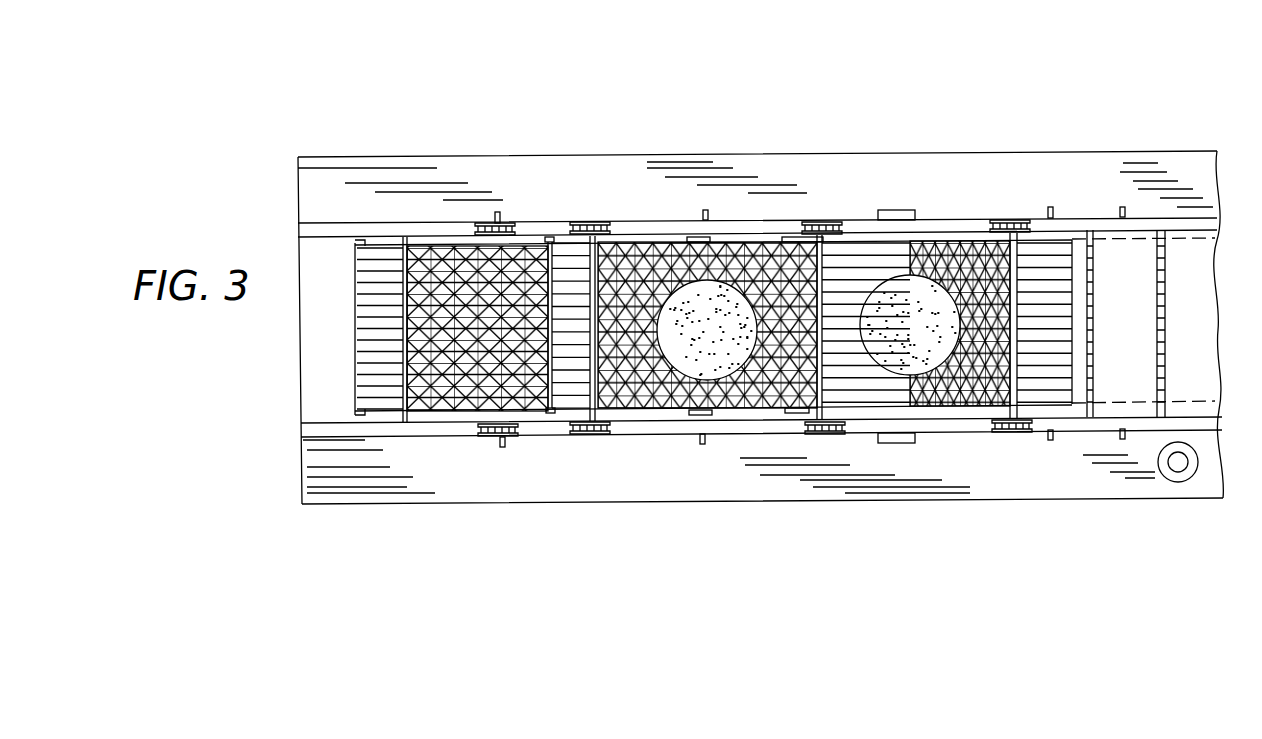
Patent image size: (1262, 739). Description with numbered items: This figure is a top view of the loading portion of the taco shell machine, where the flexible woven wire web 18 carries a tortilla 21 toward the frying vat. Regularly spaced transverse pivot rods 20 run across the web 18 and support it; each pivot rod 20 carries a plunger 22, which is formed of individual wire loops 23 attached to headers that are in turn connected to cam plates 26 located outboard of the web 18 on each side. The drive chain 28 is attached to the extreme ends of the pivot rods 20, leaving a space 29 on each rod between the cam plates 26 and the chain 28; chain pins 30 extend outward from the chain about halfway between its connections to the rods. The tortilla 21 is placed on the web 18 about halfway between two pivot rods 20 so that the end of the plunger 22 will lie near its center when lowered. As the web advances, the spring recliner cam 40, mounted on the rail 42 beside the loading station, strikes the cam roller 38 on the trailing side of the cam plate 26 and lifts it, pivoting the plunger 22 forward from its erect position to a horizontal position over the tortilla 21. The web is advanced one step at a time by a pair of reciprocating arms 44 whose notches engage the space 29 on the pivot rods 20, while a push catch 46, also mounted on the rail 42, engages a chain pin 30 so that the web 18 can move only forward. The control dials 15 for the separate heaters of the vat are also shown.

The control dials 15 is at (1176, 472).
The web 18 is at (628, 263).
The pivot rods 20 is at (403, 267).
The tortilla 21 is at (721, 330).
The plungers 22 is at (864, 412).
The wire loops 23 is at (378, 395).
The cam plates 26 is at (834, 222).
The drive chain 28 is at (838, 433).
The space 29 is at (595, 413).
The chain pins 30 is at (503, 440).
The cam roller 38 is at (552, 412).
The spring recliner cam 40 is at (703, 416).
The rail 42 is at (432, 483).
The arms 44 is at (798, 414).
The push catch 46 is at (902, 442).